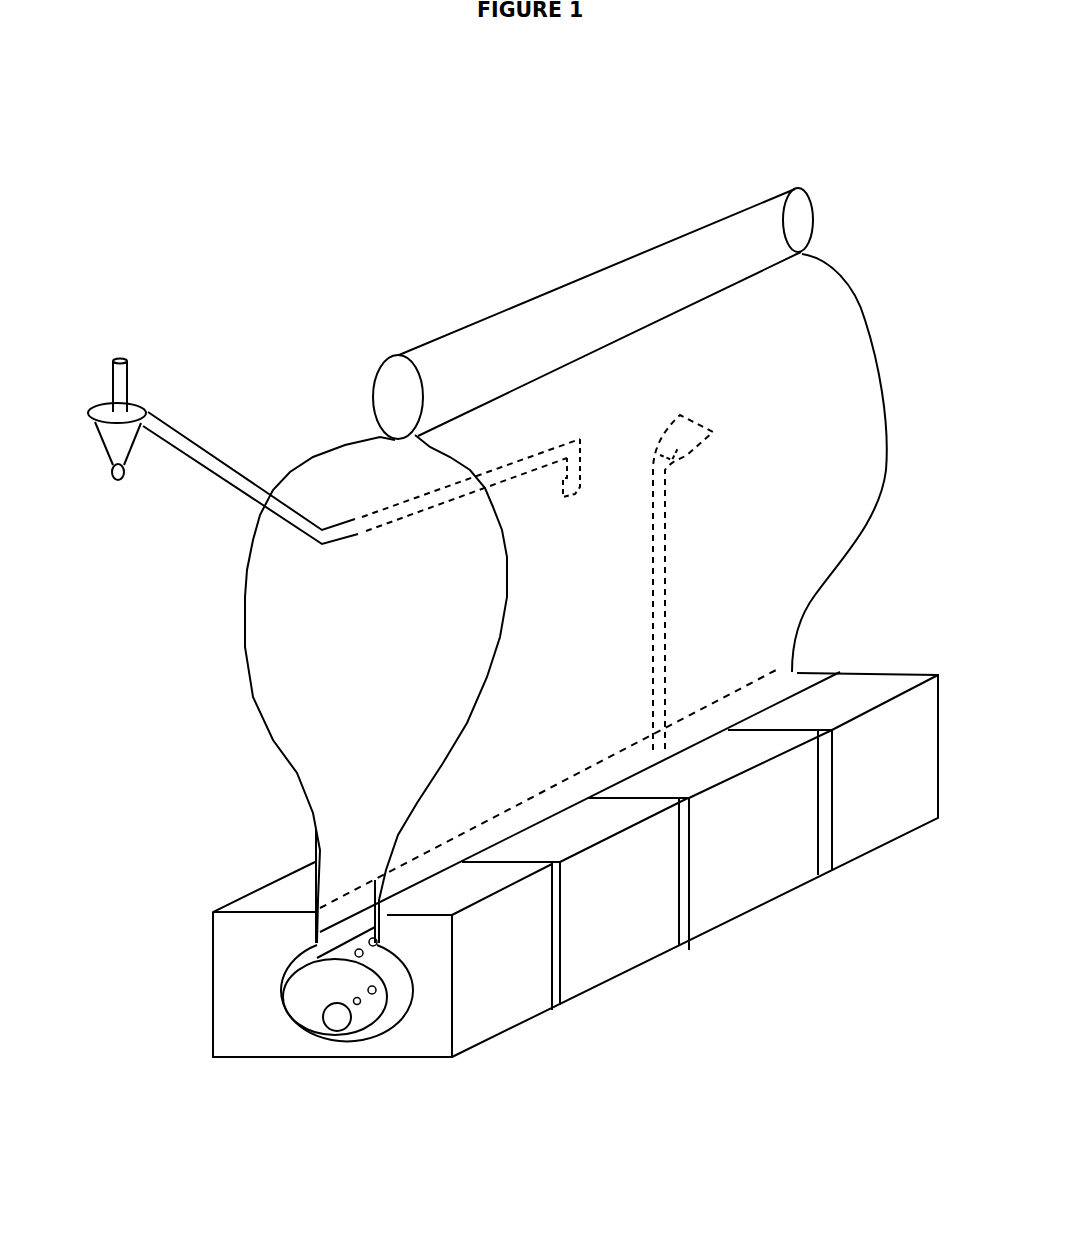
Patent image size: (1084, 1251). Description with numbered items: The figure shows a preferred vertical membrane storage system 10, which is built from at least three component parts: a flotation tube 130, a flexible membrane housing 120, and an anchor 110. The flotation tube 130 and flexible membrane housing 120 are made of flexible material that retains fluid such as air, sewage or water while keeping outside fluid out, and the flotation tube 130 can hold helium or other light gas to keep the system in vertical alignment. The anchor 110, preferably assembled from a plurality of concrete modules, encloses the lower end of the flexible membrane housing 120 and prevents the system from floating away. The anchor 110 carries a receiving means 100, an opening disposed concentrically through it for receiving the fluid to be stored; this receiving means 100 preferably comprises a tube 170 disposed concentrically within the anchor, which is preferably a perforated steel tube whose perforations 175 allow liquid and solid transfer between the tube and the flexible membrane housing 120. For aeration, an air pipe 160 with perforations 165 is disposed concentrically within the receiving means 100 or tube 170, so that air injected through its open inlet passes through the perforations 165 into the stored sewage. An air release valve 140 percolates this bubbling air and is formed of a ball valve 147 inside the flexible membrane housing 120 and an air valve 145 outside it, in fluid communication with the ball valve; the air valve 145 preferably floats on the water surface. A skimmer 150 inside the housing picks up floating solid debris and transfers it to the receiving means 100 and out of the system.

The vertical membrane storage system 10 is at (572, 247).
The receiving means 100 is at (270, 977).
The anchor 110 is at (627, 921).
The flexible membrane housing 120 is at (247, 702).
The flotation tube 130 is at (466, 322).
The air release valve 140 is at (230, 488).
The air valve 145 is at (127, 393).
The ball valve 147 is at (585, 495).
The skimmer 150 is at (718, 432).
The air pipe 160 is at (333, 1033).
The perforations 165 is at (360, 1004).
The tube 170 is at (296, 1003).
The perforations 175 is at (356, 962).